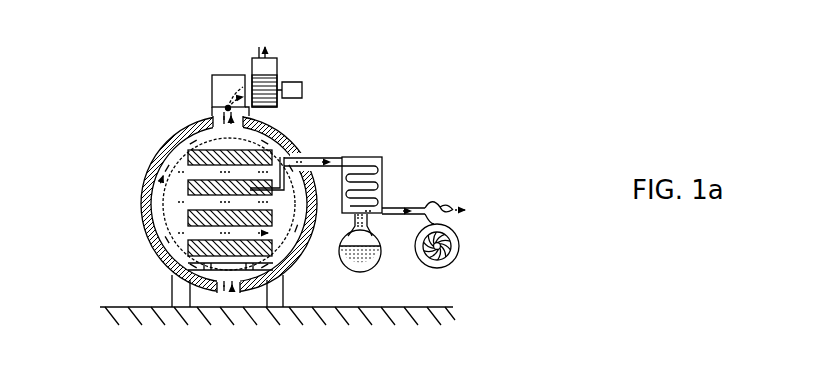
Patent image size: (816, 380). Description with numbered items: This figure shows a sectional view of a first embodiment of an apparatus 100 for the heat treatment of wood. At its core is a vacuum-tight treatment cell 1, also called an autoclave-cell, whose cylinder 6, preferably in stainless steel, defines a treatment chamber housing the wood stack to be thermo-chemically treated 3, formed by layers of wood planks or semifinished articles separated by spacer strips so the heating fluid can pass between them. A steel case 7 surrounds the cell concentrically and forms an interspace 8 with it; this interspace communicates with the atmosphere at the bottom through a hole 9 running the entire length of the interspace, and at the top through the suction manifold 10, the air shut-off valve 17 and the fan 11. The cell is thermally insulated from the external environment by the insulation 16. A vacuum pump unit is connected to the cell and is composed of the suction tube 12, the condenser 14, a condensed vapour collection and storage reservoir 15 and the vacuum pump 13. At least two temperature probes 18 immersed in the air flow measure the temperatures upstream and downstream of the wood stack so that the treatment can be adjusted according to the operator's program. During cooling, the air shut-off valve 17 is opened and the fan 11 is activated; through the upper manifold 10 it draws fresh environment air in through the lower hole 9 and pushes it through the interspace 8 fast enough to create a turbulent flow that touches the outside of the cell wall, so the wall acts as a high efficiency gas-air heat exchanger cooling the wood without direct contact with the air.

The apparatus 100 is at (112, 60).
The vacuum-tight treatment cell 1 is at (172, 188).
The wood stack to be thermo-chemically treated 3 is at (188, 218).
The cylinder 6 is at (163, 258).
The case 7 is at (160, 140).
The interspace 8 is at (150, 207).
The hole 9 is at (240, 297).
The suction manifold 10 is at (232, 76).
The fan 11 is at (281, 58).
The suction tube 12 is at (336, 158).
The vacuum pump 13 is at (455, 250).
The condenser 14 is at (370, 178).
The condensed vapour collection and storage reservoir 15 is at (378, 263).
The insulation 16 is at (183, 128).
The air shut-off valve 17 is at (228, 108).
The temperature probes 18 is at (283, 158).